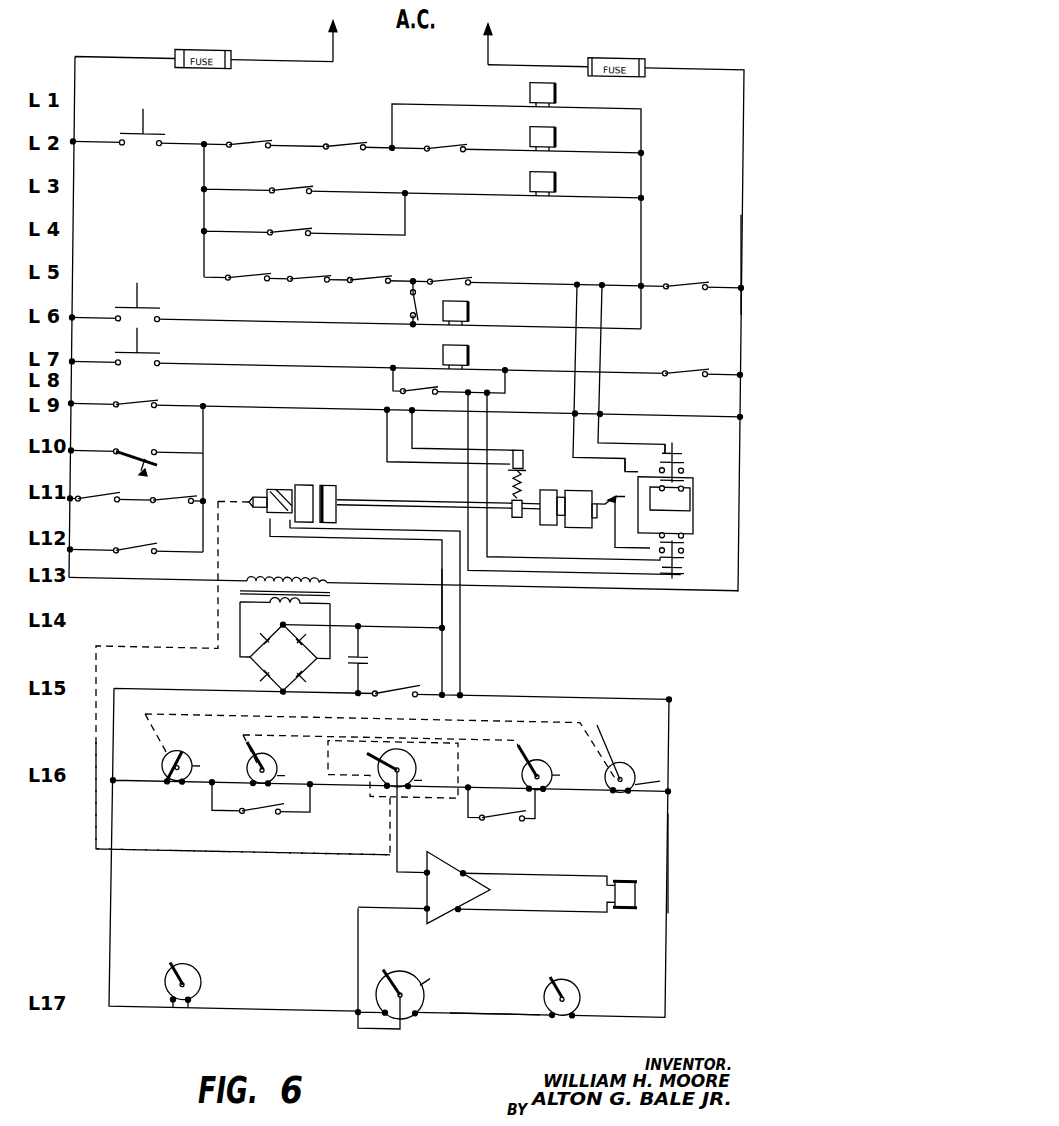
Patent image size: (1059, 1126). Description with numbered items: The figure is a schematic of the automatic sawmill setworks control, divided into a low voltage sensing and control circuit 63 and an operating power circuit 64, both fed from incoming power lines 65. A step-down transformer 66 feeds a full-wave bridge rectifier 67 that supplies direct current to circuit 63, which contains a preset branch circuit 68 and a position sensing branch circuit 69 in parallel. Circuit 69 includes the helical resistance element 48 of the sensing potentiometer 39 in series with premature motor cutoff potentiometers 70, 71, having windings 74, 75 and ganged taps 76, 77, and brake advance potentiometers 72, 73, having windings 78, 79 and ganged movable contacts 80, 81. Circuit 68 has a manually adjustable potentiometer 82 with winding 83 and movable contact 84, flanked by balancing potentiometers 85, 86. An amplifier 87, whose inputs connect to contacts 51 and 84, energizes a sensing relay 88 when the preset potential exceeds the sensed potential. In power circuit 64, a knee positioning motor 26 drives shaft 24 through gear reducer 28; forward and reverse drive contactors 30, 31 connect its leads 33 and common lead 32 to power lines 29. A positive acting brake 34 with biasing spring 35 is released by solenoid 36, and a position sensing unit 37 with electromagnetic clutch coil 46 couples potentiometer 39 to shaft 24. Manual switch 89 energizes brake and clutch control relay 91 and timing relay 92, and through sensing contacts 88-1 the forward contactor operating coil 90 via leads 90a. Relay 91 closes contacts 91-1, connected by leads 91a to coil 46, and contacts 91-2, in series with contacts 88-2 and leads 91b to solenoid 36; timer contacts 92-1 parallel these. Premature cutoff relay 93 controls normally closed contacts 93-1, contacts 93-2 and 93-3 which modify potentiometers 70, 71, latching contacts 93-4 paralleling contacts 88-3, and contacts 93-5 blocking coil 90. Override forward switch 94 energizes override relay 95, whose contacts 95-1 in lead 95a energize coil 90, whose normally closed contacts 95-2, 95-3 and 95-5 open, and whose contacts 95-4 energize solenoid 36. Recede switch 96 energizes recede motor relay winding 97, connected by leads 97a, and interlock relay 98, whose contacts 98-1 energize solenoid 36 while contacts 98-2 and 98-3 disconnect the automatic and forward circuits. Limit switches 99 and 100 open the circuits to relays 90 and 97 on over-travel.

The incoming power lines 65 is at (488, 45).
The manually controlled switch 89 is at (157, 136).
The normally closed contacts of override relay 95-3 is at (283, 118).
The normally closed contacts of interlock relay 98-2 is at (372, 118).
The normally closed contacts of premature cutoff relay 93-1 is at (468, 128).
The brake and clutch control relay 91 is at (557, 90).
The timing relay 92 is at (556, 136).
The premature cutoff relay 93 is at (556, 181).
The normally closed contacts of sensing relay 88-3 is at (310, 184).
The normally open latching contacts 93-4 is at (315, 226).
The sensing relay contacts 88-1 is at (268, 270).
The normally closed contacts of premature cutoff relay 93-5 is at (318, 278).
The normally closed contacts of override relay 95-2 is at (393, 250).
The normally closed contacts of interlock relay 98-3 is at (482, 252).
The limit switch 99 is at (675, 272).
The normally open contacts of override relay 95-1 is at (408, 304).
The jumper lead 95a is at (410, 312).
The override relay 95 is at (470, 308).
The interlock relay 98 is at (443, 338).
The manual override forward switch 94 is at (166, 292).
The recede control switch 96 is at (149, 352).
The limit switch 100 is at (698, 362).
The leads 90a is at (600, 352).
The operating power circuit 64 is at (743, 236).
The normally open contacts of interlock relay 98-1 is at (153, 400).
The normally closed contacts of override relay 95-5 is at (405, 390).
The normally open timing relay contacts 92-1 is at (144, 450).
The normally open contacts of brake and clutch relay 91-2 is at (100, 500).
The sensing relay contacts 88-2 is at (192, 498).
The normally open contacts of override relay 95-4 is at (135, 552).
The leads 91b is at (385, 424).
The leads 97a is at (470, 432).
The brake solenoid 36 is at (534, 425).
The biasing spring 35 is at (524, 478).
The positive acting brake 34 is at (514, 509).
The setworks shaft 24 is at (428, 470).
The gear reducer 28 is at (550, 482).
The knee positioning motor 26 is at (580, 518).
The common lead 32 is at (628, 498).
The forward drive contactor 30 is at (698, 459).
The three-phase power lines 29 is at (693, 459).
The operating coil 90 is at (680, 448).
The motor leads 33 is at (640, 465).
The reverse drive contactor 31 is at (692, 554).
The recede motor relay winding 97 is at (682, 560).
The electromagnetic clutch coil 46 is at (292, 482).
The position sensing unit 37 is at (333, 476).
The step-down transformer 66 is at (338, 596).
The full-wave bridge rectifier 67 is at (296, 664).
The normally open contacts of brake and clutch relay 91-1 is at (425, 668).
The leads 91a is at (445, 658).
The brake advance potentiometer 72 is at (163, 763).
The movable contact 80 is at (172, 760).
The winding 78 is at (213, 767).
The normally open contacts of premature cutoff relay 93-2 is at (278, 808).
The premature motor cutoff potentiometer 70 is at (274, 758).
The movable tap 76 is at (249, 746).
The winding 74 is at (298, 781).
The sensing potentiometer 39 is at (412, 758).
The potentiometer contact 51 is at (370, 755).
The helical resistance element 48 is at (436, 782).
The position sensing branch circuit 69 is at (328, 790).
The premature motor cutoff potentiometer 71 is at (521, 769).
The movable tap 77 is at (534, 752).
The winding 75 is at (573, 774).
The movable contact 81 is at (615, 752).
The brake advance potentiometer 73 is at (631, 764).
The winding 79 is at (664, 778).
The normally closed contacts of premature cutoff relay 93-3 is at (500, 812).
The amplifier 87 is at (426, 877).
The sensing relay 88 is at (644, 852).
The low voltage sensing and control circuit 63 is at (672, 838).
The balancing potentiometer 85 is at (192, 968).
The movable contact 84 is at (386, 968).
The manually adjustable potentiometer 82 is at (417, 968).
The winding 83 is at (444, 981).
The balancing potentiometer 86 is at (580, 986).
The preset branch circuit 68 is at (503, 1020).